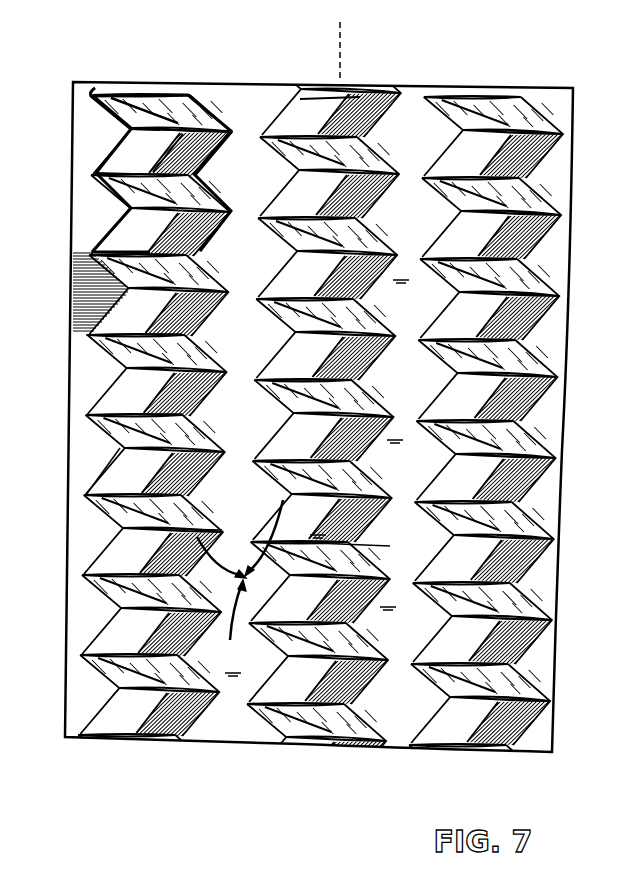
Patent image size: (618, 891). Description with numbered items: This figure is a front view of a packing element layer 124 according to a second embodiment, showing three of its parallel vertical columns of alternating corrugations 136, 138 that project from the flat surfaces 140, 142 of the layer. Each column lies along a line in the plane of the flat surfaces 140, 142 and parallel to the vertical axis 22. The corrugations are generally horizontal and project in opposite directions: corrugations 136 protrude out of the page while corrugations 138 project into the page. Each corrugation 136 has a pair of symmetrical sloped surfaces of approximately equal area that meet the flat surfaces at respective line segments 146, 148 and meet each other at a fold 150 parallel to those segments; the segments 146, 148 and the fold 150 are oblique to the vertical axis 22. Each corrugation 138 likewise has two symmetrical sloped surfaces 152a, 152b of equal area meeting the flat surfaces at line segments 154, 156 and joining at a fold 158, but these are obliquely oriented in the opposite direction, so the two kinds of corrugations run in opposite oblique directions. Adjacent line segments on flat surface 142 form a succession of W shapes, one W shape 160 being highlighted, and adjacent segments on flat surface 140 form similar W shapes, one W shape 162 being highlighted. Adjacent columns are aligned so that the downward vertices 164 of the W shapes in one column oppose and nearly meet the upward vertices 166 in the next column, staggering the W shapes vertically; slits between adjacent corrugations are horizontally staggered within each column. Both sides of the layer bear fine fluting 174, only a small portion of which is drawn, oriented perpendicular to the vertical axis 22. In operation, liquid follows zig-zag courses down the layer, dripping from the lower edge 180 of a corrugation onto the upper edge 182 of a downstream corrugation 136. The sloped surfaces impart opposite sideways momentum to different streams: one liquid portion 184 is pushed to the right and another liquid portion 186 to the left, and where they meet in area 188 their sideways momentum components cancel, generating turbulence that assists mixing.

The vertical axis 22 is at (338, 29).
The packing element layer 124 is at (404, 54).
The corrugation 136 is at (110, 111).
The corrugation 138 is at (113, 193).
The flat surface 140 is at (84, 374).
The flat surface 142 is at (225, 418).
The line segment 146 is at (238, 146).
The line segment 148 is at (111, 152).
The fold 150 is at (103, 162).
The sloped surface 152a is at (233, 163).
The sloped surface 152b is at (103, 166).
The line segment 154 is at (233, 192).
The line segment 156 is at (117, 208).
The fold 158 is at (216, 226).
The W shape 160 is at (192, 95).
The W shape 162 is at (93, 91).
The downward vertex 164 is at (233, 128).
The upward vertex 166 is at (302, 98).
The fine fluting 174 is at (72, 293).
The lower edge 180 is at (130, 412).
The upper edge 182 is at (153, 457).
The liquid portion 184 is at (213, 567).
The liquid portion 186 is at (268, 575).
The area 188 is at (235, 621).